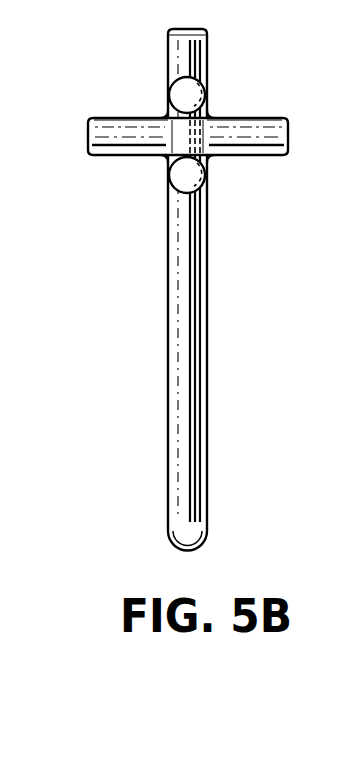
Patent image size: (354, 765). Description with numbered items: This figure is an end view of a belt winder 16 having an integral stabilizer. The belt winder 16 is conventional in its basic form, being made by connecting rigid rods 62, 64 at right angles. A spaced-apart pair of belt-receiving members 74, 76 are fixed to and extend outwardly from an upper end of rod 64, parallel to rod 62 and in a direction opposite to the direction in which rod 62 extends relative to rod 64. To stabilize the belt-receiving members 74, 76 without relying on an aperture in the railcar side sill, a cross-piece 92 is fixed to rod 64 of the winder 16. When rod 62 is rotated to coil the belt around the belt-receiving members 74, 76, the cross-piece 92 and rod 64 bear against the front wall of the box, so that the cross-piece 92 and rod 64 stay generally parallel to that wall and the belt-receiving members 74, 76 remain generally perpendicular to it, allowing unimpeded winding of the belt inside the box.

The belt winder 16 is at (203, 290).
The rigid rod 62 is at (173, 532).
The rigid rod 64 is at (188, 308).
The belt-receiving member 74 is at (195, 172).
The belt-receiving member 76 is at (183, 94).
The cross-piece 92 is at (258, 113).